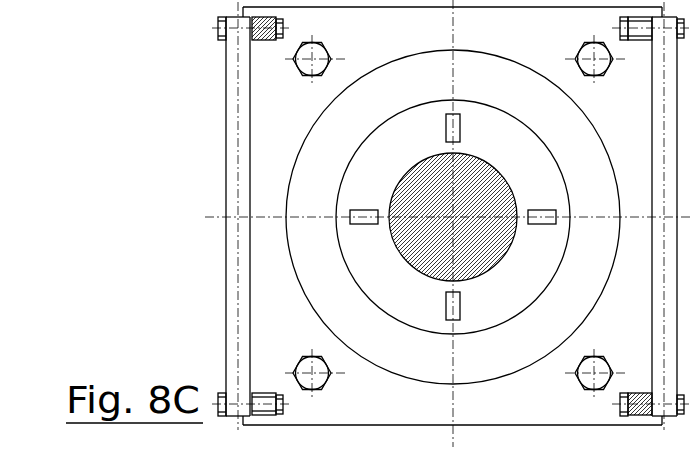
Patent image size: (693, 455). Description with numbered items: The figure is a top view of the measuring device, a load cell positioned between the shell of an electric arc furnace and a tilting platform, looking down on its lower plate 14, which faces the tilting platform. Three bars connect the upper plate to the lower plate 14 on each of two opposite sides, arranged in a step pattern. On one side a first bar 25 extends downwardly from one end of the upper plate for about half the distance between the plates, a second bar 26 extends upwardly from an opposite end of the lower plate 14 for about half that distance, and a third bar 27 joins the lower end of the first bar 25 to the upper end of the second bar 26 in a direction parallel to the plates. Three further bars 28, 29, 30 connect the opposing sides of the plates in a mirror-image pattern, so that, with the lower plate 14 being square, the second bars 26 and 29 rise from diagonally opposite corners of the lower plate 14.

The lower plate 14 is at (521, 42).
The first bar 25 is at (267, 41).
The second bar 26 is at (262, 392).
The third bar 27 is at (251, 130).
The first bar 28 is at (640, 392).
The second bar 29 is at (640, 41).
The third bar 30 is at (651, 131).